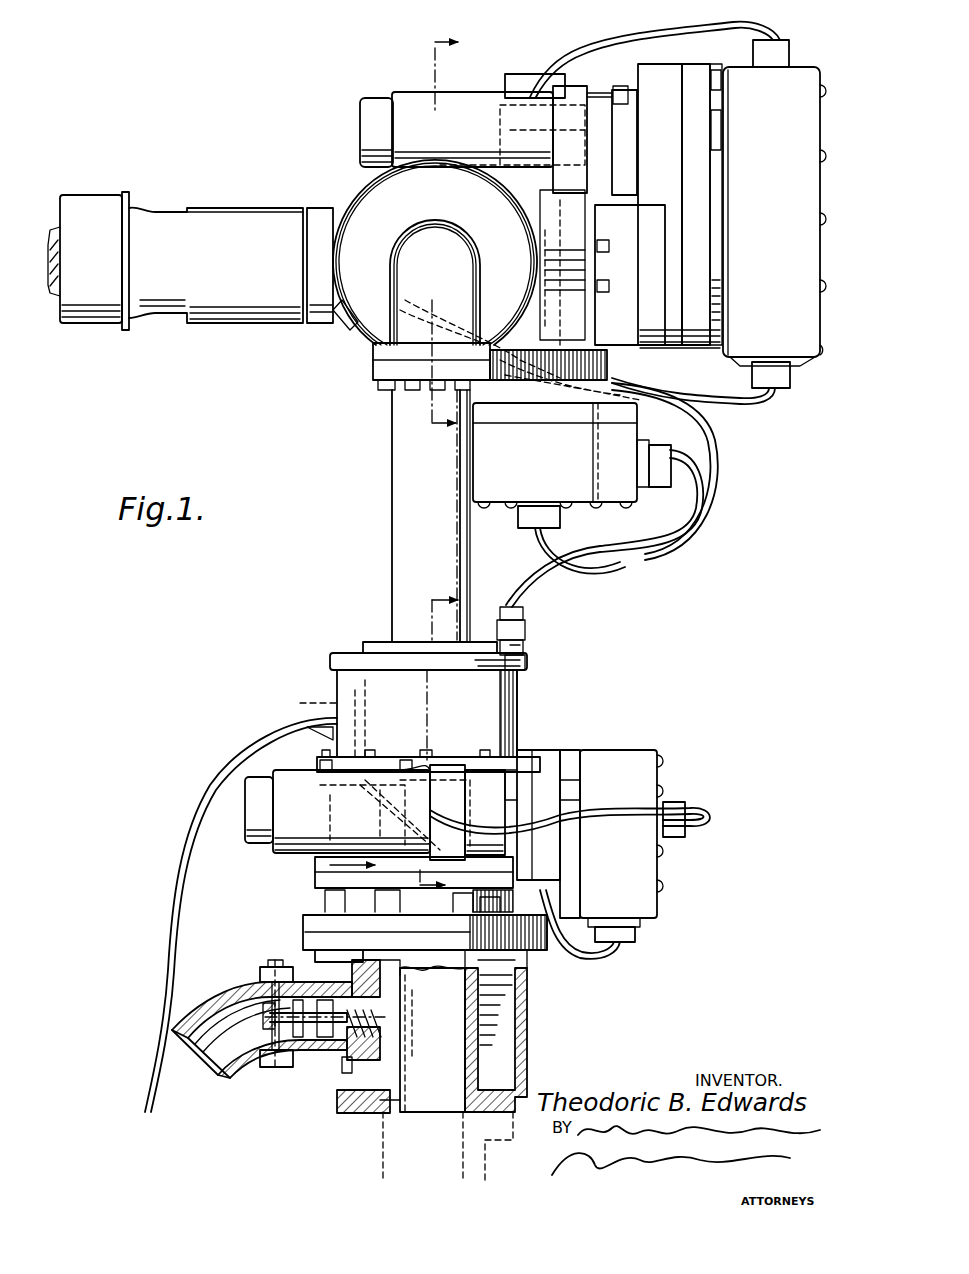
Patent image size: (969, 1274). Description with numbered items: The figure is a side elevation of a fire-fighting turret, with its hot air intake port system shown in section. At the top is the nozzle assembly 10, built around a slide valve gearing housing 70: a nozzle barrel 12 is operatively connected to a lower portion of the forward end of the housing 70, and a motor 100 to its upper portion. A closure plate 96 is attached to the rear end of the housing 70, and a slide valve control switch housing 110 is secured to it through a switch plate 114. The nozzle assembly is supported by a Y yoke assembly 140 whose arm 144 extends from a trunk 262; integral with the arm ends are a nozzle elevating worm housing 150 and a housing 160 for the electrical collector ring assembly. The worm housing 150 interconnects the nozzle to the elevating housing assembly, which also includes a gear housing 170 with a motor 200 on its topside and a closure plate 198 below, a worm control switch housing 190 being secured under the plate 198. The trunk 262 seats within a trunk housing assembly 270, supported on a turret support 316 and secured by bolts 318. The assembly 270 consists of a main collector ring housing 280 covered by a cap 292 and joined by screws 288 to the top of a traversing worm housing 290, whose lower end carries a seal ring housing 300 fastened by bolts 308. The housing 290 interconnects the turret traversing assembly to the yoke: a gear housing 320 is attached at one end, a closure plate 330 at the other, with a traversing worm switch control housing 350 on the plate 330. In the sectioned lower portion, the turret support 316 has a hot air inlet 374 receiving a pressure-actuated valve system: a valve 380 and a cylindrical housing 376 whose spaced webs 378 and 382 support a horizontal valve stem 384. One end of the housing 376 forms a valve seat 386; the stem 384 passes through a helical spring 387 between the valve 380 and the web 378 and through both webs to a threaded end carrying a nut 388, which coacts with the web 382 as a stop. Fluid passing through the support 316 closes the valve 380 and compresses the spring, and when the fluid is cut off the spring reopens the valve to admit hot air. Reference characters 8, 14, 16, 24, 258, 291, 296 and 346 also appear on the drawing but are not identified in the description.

The section line 8- 8 is at (443, 234).
The nozzle assembly 10 is at (228, 195).
The nozzle barrel 12 is at (270, 212).
The end cap 14 is at (52, 222).
The flange 16 is at (104, 196).
The section line 24- 24 is at (436, 746).
The slide valve gearing housing 70 is at (651, 63).
The closure plate 96 is at (700, 75).
The motor 100 is at (498, 134).
The slide valve control switch housing 110 is at (836, 52).
The switch plate 114 is at (724, 230).
The Y yoke assembly 140 is at (390, 576).
The arm 144 is at (412, 300).
The nozzle elevating worm housing 150 is at (621, 290).
The collector ring housing 160 is at (370, 200).
The gear housing 170 is at (540, 405).
The worm control switch housing 190 is at (498, 512).
The closure plate 198 is at (578, 415).
The motor 200 is at (528, 84).
The connector 258 is at (752, 378).
The trunk 262 is at (480, 640).
The trunk housing assembly 270 is at (604, 720).
The main collector ring housing 280 is at (522, 705).
The screws 288 is at (450, 768).
The traversing worm housing 290 is at (330, 865).
The fitting 291 is at (530, 660).
The cap 292 is at (349, 662).
The cable 296 is at (241, 901).
The seal ring housing 300 is at (335, 908).
The bolts 308 is at (325, 898).
The turret support 316 is at (532, 1042).
The bolts 318 is at (320, 957).
The gear housing 320 is at (540, 764).
The closure plate 330 is at (575, 750).
The motor end 346 is at (285, 825).
The traversing worm switch control housing 350 is at (655, 752).
The hot air inlet 374 is at (210, 1060).
The cylindrical housing 376 is at (338, 1048).
The web 378 is at (308, 1052).
The valve 380 is at (410, 998).
The web 382 is at (290, 1050).
The valve stem 384 is at (268, 1020).
The valve seat 386 is at (400, 1076).
The helical spring 387 is at (400, 1044).
The nut 388 is at (270, 1032).